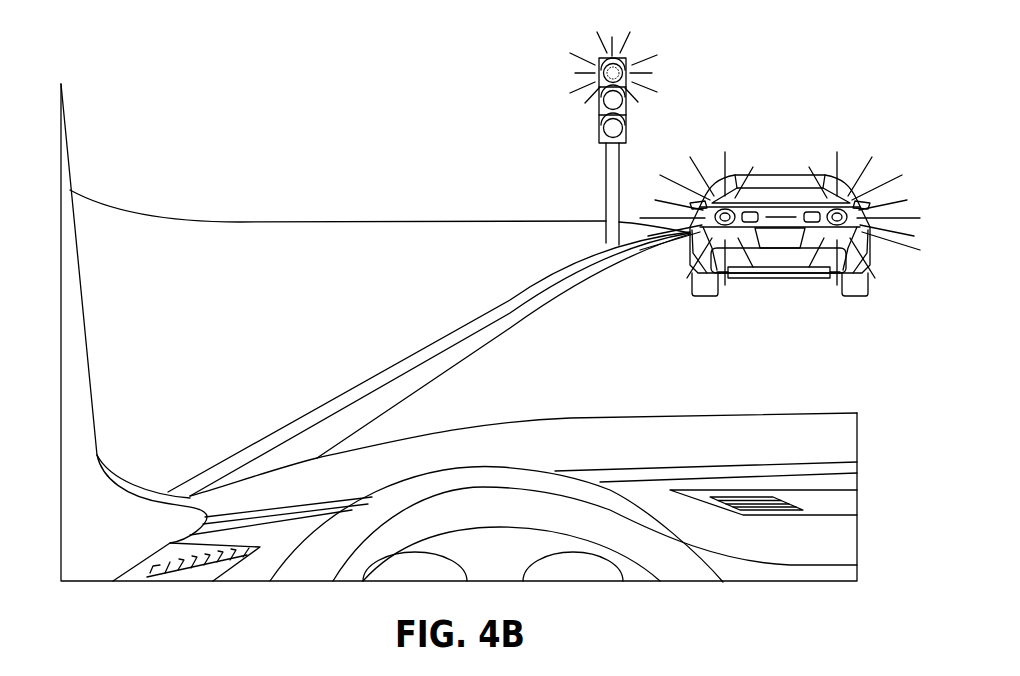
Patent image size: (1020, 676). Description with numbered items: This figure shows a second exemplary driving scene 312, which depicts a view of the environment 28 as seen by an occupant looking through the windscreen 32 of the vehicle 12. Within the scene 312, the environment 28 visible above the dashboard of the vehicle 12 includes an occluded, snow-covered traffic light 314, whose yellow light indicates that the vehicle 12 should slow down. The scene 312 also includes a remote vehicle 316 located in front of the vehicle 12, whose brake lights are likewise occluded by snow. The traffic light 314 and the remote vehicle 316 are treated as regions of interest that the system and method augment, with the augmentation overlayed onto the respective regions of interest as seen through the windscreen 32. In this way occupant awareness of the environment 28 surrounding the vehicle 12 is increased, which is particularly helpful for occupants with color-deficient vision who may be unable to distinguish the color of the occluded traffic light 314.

The vehicle 12 is at (739, 447).
The environment 28 is at (147, 280).
The windscreen 32 is at (86, 378).
The second exemplary driving scene 312 is at (222, 148).
The occluded traffic light 314 is at (598, 118).
The remote vehicle 316 is at (777, 173).